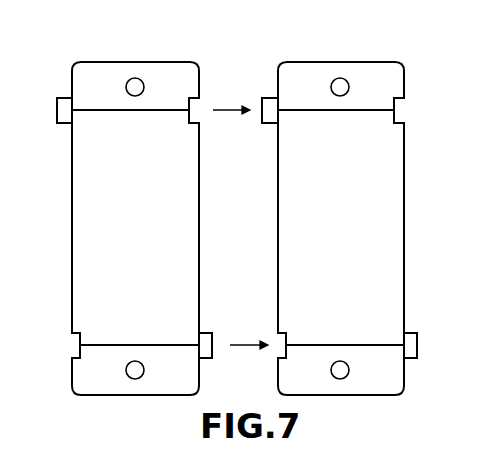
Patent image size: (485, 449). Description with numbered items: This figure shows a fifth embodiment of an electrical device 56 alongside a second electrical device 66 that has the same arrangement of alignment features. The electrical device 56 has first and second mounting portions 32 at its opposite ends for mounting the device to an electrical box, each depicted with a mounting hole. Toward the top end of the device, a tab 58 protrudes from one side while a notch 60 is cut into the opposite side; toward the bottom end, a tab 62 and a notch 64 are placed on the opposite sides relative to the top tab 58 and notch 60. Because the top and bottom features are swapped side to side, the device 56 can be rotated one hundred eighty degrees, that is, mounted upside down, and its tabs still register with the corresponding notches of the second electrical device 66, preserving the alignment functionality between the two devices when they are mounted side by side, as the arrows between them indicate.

The electrical device 56 is at (62, 67).
The mounting portions 32 is at (136, 70).
The tab 58 is at (57, 110).
The notch 60 is at (193, 108).
The tab 62 is at (212, 343).
The notch 64 is at (72, 345).
The second electrical device 66 is at (415, 67).